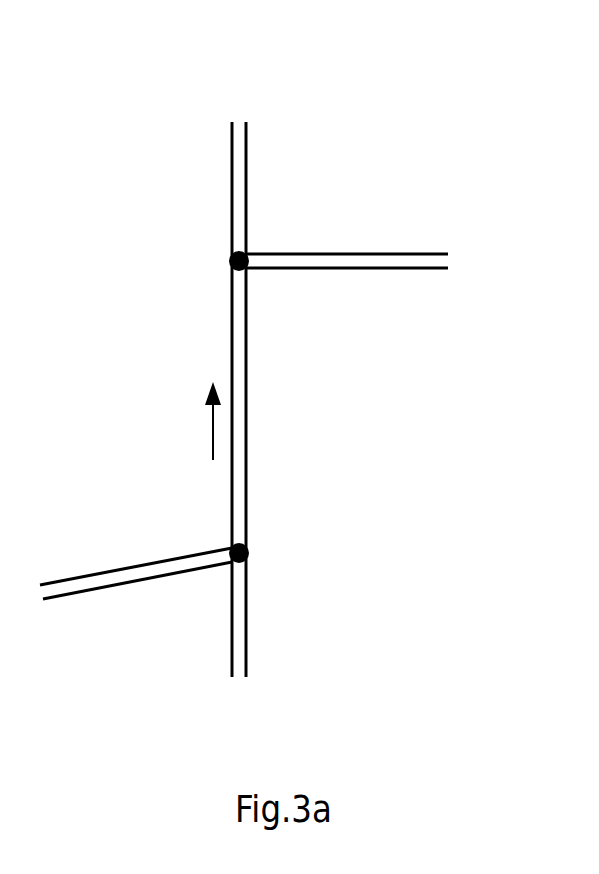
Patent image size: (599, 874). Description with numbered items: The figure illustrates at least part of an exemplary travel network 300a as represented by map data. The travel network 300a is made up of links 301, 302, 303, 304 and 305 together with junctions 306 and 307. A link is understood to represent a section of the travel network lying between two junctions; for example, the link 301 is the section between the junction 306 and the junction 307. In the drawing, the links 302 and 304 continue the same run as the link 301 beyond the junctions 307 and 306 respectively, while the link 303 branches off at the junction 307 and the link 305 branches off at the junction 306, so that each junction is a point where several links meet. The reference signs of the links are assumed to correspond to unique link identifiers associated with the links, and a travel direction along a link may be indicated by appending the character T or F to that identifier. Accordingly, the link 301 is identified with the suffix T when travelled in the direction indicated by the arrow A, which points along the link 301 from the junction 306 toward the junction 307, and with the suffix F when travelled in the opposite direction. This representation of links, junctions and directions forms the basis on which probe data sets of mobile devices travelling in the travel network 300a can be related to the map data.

The travel network 300a is at (430, 101).
The link 301 is at (248, 363).
The link 302 is at (250, 175).
The link 303 is at (365, 252).
The link 304 is at (248, 622).
The link 305 is at (136, 563).
The junction 306 is at (250, 553).
The junction 307 is at (230, 258).
The arrow A is at (211, 432).